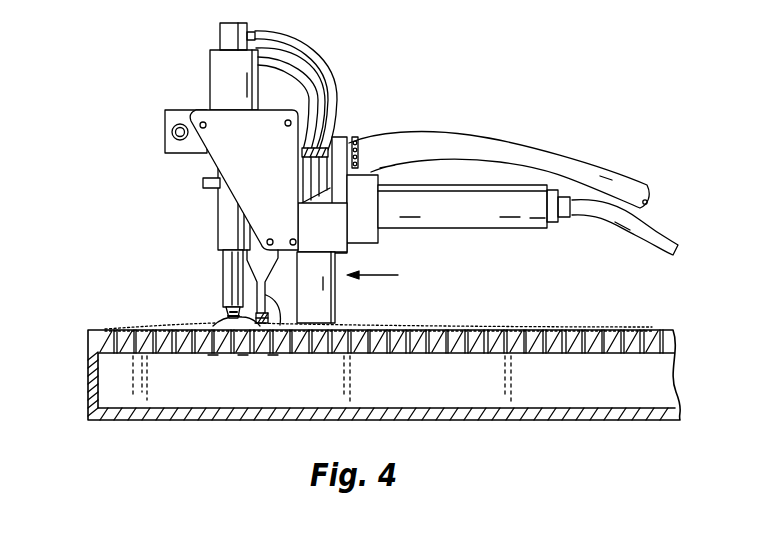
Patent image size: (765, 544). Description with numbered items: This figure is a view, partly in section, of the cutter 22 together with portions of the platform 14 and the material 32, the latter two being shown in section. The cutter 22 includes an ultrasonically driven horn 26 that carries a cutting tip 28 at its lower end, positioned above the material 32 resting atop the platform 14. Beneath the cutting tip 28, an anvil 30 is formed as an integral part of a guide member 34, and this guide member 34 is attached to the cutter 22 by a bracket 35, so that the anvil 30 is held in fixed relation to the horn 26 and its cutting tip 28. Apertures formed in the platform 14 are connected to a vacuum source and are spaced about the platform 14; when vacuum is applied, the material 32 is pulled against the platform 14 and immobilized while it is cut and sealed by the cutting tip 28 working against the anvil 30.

The cutter 22 is at (156, 181).
The ultrasonically driven horn 26 is at (222, 292).
The cutting tip 28 is at (228, 314).
The platform 14 is at (88, 349).
The material 32 is at (648, 288).
The guide member 34 is at (213, 357).
The anvil 30 is at (243, 357).
The bracket 35 is at (273, 357).